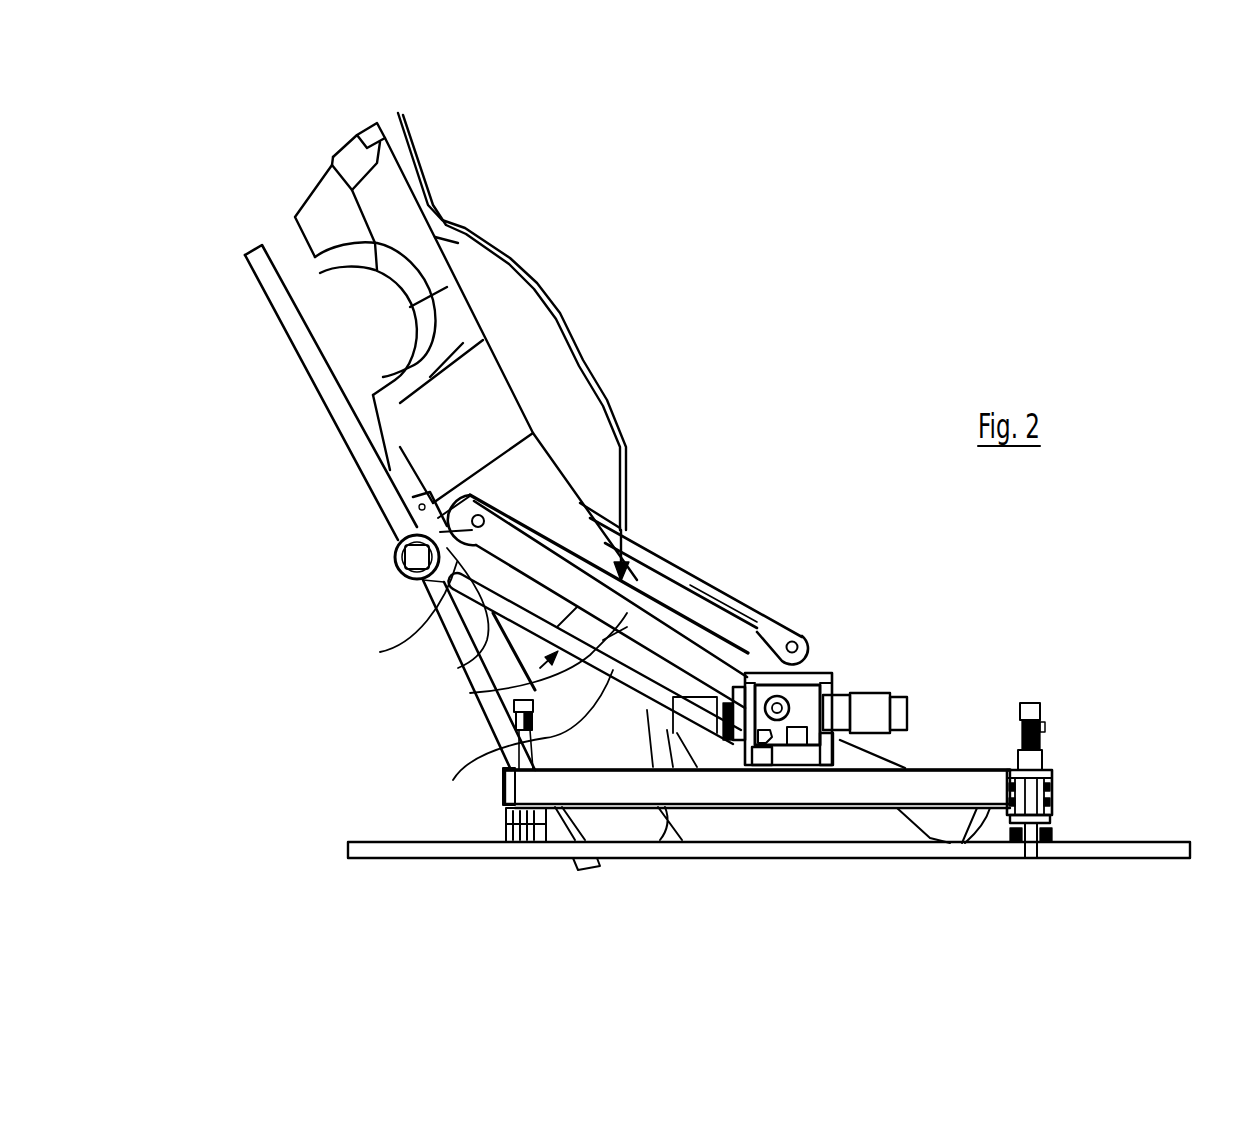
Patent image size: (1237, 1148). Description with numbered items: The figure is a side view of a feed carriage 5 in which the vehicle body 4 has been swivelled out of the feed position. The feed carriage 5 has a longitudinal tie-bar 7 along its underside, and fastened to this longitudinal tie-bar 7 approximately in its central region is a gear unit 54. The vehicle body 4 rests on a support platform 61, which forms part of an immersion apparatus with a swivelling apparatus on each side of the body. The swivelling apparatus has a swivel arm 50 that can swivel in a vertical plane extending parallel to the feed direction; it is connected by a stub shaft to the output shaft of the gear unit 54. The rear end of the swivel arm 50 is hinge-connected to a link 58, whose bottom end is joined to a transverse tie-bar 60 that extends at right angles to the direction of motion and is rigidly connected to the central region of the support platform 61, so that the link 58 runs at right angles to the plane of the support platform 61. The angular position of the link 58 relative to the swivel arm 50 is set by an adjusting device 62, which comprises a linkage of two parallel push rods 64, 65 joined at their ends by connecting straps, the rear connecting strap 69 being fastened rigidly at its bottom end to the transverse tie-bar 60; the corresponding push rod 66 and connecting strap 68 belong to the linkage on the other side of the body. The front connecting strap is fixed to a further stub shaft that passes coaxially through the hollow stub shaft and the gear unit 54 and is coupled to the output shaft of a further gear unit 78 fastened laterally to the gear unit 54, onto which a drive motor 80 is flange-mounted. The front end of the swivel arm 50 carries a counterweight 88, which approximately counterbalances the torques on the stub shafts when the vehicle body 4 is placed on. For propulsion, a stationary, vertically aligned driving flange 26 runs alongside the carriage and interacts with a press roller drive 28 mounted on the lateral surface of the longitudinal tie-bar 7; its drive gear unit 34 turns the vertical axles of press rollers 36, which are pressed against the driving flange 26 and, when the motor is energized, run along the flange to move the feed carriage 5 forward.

The vehicle body 4 is at (562, 312).
The support platform 61 is at (307, 357).
The transverse tie-bar 60 is at (403, 577).
The link 58 is at (440, 613).
The adjusting device 62 is at (470, 693).
The rear connecting strap 69 is at (493, 613).
The push rod 65 is at (505, 752).
The swivel arm 50 is at (703, 620).
The push rod 64 is at (667, 557).
The push rod 66 is at (730, 607).
The connecting strap 68 is at (767, 657).
The gear unit 54 is at (807, 670).
The drive motor 80 is at (865, 710).
The further gear unit 78 is at (797, 777).
The longitudinal tie-bar 7 is at (617, 790).
The feed carriage 5 is at (840, 787).
The counterweight 88 is at (927, 840).
The press roller drive 28 is at (1052, 731).
The drive gear unit 34 is at (1048, 805).
The press roller 36 is at (1028, 858).
The driving flange 26 is at (1160, 858).